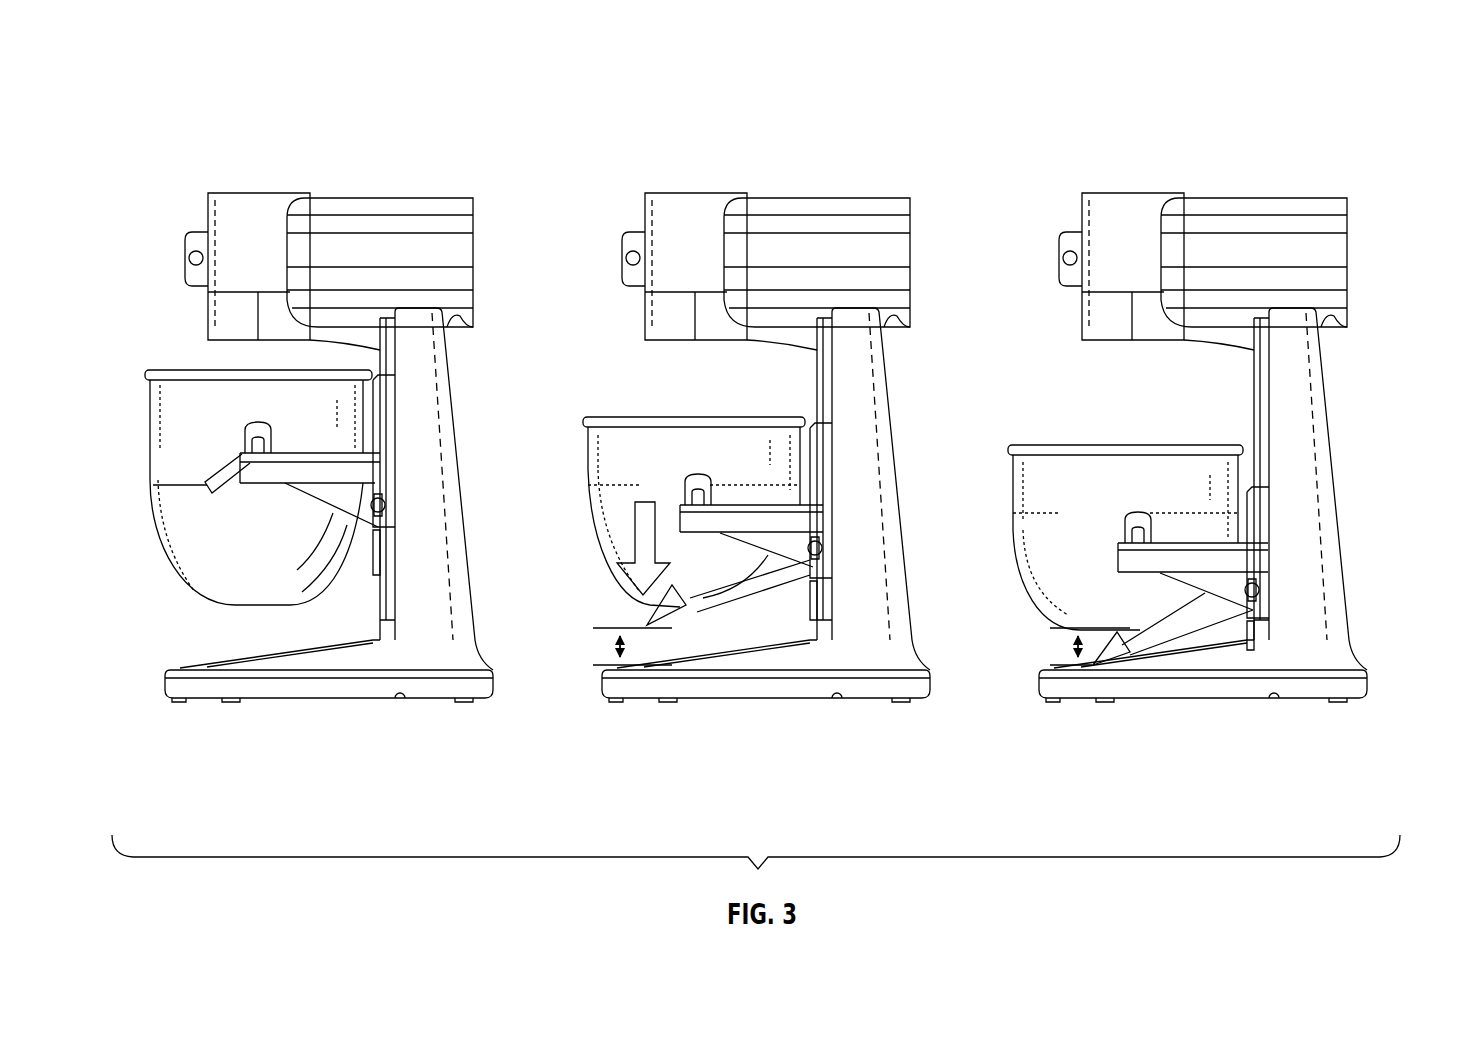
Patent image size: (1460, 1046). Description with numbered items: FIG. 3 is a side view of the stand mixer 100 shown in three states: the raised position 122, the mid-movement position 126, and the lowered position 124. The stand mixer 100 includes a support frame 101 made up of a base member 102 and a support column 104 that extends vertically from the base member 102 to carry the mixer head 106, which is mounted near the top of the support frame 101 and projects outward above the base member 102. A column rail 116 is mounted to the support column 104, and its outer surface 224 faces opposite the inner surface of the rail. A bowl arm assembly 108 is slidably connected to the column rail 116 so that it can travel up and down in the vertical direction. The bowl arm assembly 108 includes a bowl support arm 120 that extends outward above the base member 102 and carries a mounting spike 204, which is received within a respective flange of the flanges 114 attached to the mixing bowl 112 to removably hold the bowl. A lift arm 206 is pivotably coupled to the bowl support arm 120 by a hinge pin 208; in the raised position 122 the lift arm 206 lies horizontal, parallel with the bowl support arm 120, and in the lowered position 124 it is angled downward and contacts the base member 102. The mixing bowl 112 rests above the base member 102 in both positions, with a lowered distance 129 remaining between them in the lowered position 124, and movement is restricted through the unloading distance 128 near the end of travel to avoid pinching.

The stand mixer 100 is at (268, 142).
The support frame 101 is at (460, 409).
The base member 102 is at (330, 690).
The support column 104 is at (468, 465).
The mixer head 106 is at (355, 197).
The bowl arm assembly 108 is at (392, 395).
The mixing bowl 112 is at (178, 553).
The flanges 114 is at (245, 438).
The column rail 116 is at (380, 350).
The bowl support arm 120 is at (300, 488).
The raised position 122 is at (151, 728).
The lowered position 124 is at (1171, 730).
The mid-movement position 126 is at (821, 730).
The unloading distance 128 is at (600, 655).
The lowered distance 129 is at (1055, 652).
The mounting spike 204 is at (257, 430).
The lift arm 206 is at (228, 482).
The hinge pin 208 is at (384, 506).
The outer surface 224 is at (377, 593).